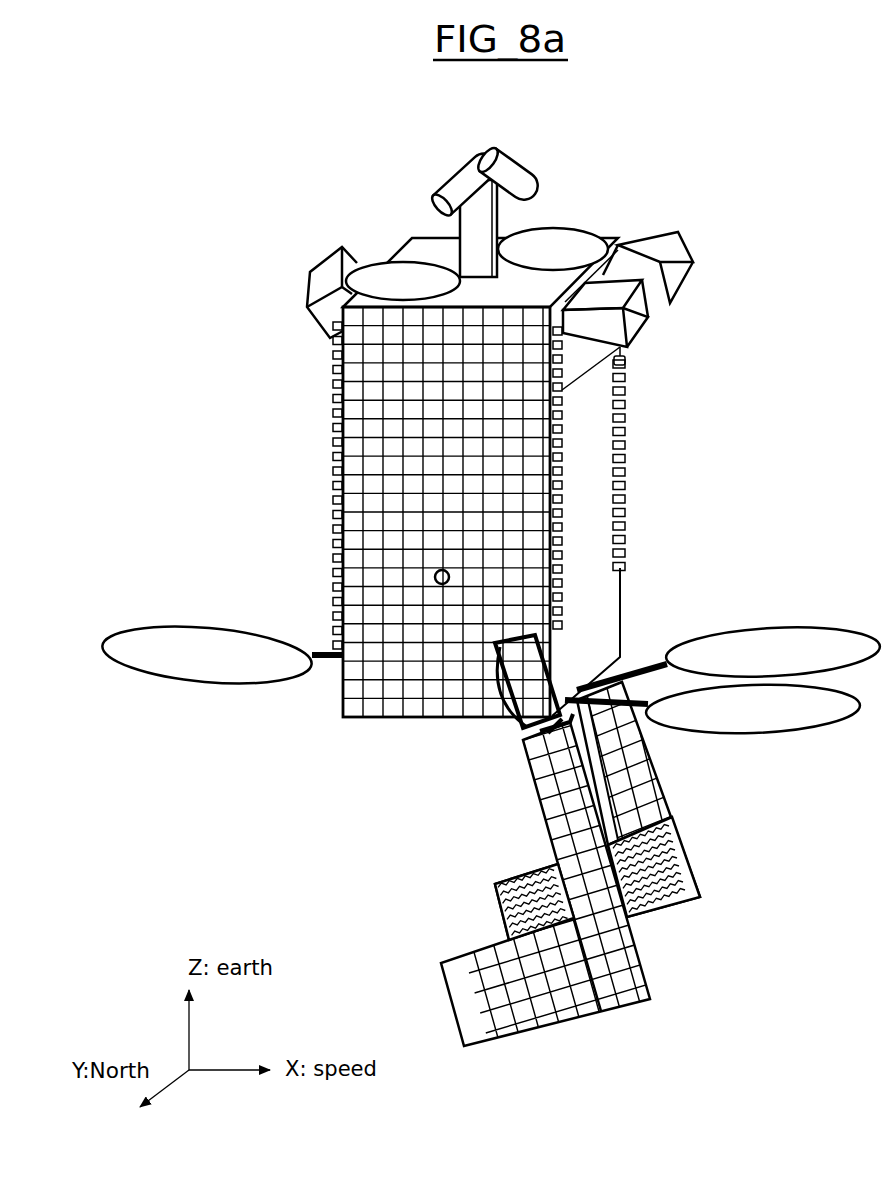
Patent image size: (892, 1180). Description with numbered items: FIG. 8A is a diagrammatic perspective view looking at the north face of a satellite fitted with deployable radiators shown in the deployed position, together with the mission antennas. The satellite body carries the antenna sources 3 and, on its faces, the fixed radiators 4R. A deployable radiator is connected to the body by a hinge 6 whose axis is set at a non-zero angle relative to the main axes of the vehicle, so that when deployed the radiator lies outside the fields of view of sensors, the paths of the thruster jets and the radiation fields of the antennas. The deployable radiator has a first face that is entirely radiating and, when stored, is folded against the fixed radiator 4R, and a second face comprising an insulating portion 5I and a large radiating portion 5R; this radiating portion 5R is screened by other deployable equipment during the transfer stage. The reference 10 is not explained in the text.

The antenna source 3 is at (456, 189).
The fixed radiator 4R is at (381, 622).
The radiating portion of deployable radiator 5R is at (652, 774).
The insulating portion of deployable radiator 5I is at (681, 871).
The hinge 6 is at (500, 640).
The satellite body 10 is at (441, 786).